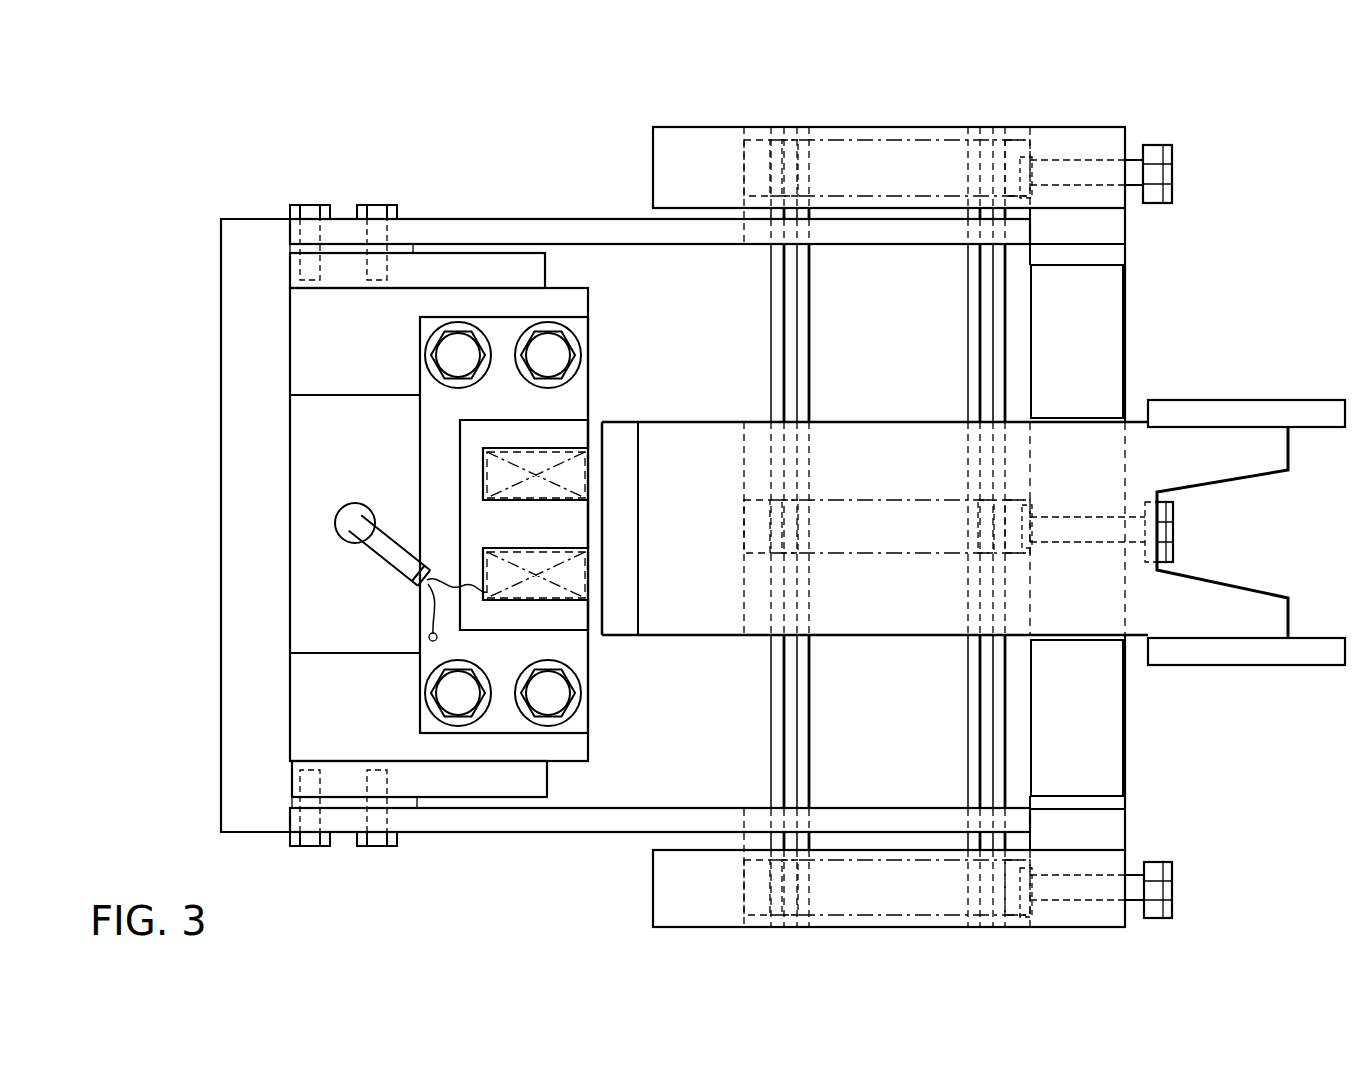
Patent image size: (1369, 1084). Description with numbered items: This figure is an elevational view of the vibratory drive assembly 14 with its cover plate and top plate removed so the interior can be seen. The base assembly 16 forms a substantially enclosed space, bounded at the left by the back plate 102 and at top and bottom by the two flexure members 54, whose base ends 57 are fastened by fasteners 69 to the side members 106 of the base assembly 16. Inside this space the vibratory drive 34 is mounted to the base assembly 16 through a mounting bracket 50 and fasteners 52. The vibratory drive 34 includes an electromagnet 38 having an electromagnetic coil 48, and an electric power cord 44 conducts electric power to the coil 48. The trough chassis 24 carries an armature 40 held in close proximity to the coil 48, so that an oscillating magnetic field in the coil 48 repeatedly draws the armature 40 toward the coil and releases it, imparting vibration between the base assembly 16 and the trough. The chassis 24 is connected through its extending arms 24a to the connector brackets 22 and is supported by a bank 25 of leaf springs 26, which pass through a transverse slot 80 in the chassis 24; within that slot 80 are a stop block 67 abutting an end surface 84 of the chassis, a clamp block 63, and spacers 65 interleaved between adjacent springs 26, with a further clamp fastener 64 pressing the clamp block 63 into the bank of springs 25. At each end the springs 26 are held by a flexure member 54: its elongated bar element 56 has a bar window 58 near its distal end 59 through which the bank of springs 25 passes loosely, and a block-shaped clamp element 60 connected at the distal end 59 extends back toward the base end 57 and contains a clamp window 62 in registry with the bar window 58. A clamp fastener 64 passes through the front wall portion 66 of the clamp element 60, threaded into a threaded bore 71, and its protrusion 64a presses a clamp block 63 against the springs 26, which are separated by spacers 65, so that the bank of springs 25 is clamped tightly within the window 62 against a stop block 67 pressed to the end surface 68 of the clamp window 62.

The vibratory drive assembly 14 is at (485, 178).
The base assembly 16 is at (663, 310).
The connector brackets 22 is at (1275, 400).
The trough chassis 24 is at (893, 421).
The extending arms 24a is at (1258, 463).
The bank of leaf springs 25 is at (763, 348).
The leaf springs 26 is at (810, 288).
The vibratory drive 34 is at (594, 400).
The electromagnet 38 is at (580, 636).
The armature 40 is at (630, 541).
The electric power cord 44 is at (375, 562).
The electromagnetic coil 48 is at (514, 549).
The mounting bracket 50 is at (420, 447).
The fasteners 52 is at (545, 376).
The flexure members 54 is at (928, 127).
The bar element 56 is at (560, 219).
The base end 57 is at (290, 827).
The bar window 58 is at (762, 815).
The distal end 59 is at (1128, 826).
The clamp element 60 is at (845, 128).
The clamp window 62 is at (1030, 918).
The clamp block 63 is at (1030, 560).
The clamp fastener 64 is at (1178, 164).
The protrusion 64a is at (1033, 198).
The spacers 65 is at (790, 500).
The front wall portion 66 is at (1112, 872).
The stop block 67 is at (770, 130).
The end surface 68 is at (752, 928).
The fasteners 69 is at (372, 205).
The threaded bore 71 is at (1128, 920).
The transverse slot 80 is at (757, 636).
The end surface 84 is at (752, 430).
The back plate 102 is at (221, 441).
The side members 106 is at (547, 281).